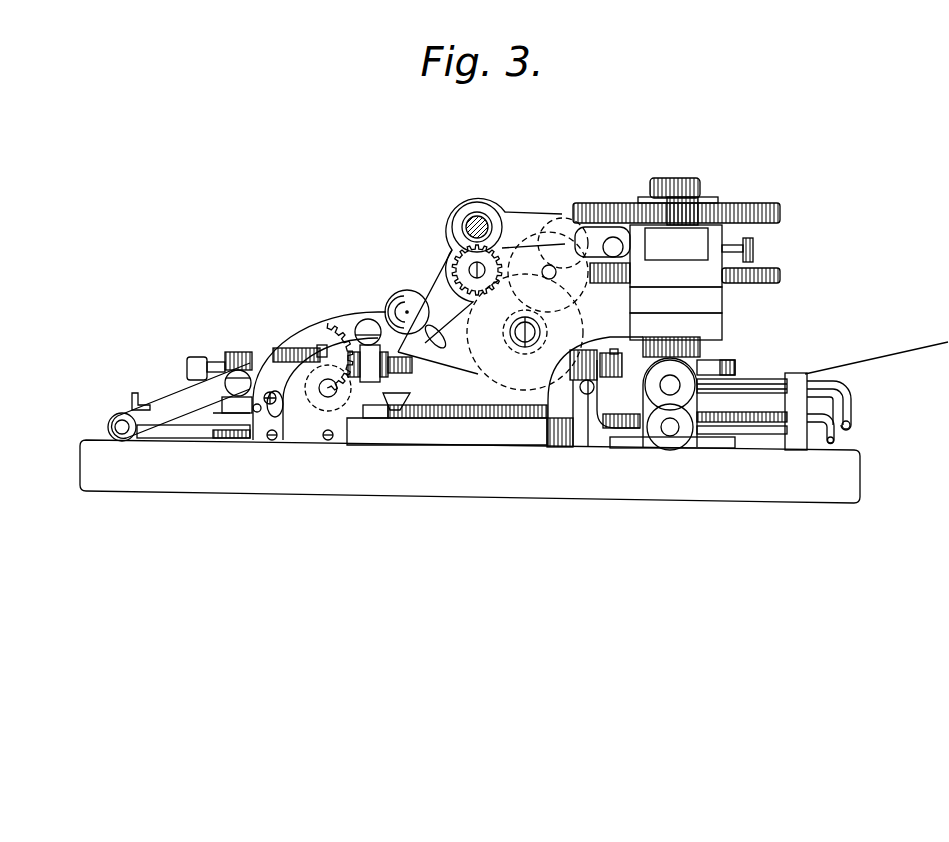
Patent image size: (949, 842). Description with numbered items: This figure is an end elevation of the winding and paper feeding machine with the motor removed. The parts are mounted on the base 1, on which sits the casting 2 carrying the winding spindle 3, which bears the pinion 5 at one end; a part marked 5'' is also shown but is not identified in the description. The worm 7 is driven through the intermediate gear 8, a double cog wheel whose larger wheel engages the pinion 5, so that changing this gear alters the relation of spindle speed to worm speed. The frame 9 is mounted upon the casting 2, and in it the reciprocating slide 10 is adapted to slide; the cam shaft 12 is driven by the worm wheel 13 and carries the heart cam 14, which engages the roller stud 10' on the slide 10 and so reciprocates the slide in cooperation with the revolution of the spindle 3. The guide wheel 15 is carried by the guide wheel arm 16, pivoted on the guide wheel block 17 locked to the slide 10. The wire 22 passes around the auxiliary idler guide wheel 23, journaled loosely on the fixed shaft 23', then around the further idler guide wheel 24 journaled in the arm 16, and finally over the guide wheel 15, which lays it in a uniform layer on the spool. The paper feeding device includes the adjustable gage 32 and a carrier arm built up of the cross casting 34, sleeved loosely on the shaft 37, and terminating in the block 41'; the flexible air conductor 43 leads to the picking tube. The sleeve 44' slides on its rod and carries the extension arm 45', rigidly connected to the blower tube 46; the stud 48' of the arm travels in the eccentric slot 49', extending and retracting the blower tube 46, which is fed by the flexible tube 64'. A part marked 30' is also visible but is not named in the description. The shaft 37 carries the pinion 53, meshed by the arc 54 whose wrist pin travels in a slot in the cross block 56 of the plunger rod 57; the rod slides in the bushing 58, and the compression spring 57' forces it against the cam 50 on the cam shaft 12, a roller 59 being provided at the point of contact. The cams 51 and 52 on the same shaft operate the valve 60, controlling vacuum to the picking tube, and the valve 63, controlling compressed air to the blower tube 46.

The base 1 is at (462, 490).
The casting 2 is at (522, 437).
The winding spindle 3 is at (467, 260).
The pinion 5 is at (445, 258).
The shaft bearing 5'' is at (461, 217).
The worm 7 is at (533, 250).
The intermediate gear 8 is at (521, 378).
The frame 9 is at (705, 297).
The reciprocating bar 10 is at (712, 271).
The roller stud 10' is at (704, 188).
The cam shaft 12 is at (678, 171).
The worm wheel 13 is at (780, 276).
The heart cam 14 is at (750, 212).
The guide wheel 15 is at (486, 210).
The guide wheel arm 16 is at (595, 243).
The guide wheel block 17 is at (755, 249).
The wire 22 is at (883, 360).
The auxiliary idler guide wheel 23 is at (578, 459).
The fixed shaft 23' is at (617, 457).
The further auxiliary idler guide wheel 24 is at (557, 218).
The frame standard 30' is at (304, 417).
The adjustable gage 32 is at (130, 400).
The cross casting 34 is at (318, 343).
The shaft 37 is at (329, 390).
The block 41' is at (194, 351).
The flexible air conductor 43 is at (840, 400).
The sleeve 44' is at (243, 357).
The extension arm 45' is at (181, 395).
The blower tube 46 is at (113, 424).
The transverse stud 48' is at (298, 457).
The eccentric slot 49' is at (290, 327).
The cam 50 is at (735, 363).
The cam 51 is at (707, 395).
The cam 52 is at (747, 430).
The pinion 53 is at (370, 395).
The arc 54 is at (331, 322).
The cross block 56 is at (368, 353).
The plunger rod 57 is at (562, 430).
The compression spring 57' is at (566, 438).
The bushing 58 is at (618, 388).
The roller 59 is at (672, 440).
The valve 60 is at (735, 447).
The valve 63 is at (683, 397).
The flexible tube 64' is at (854, 434).